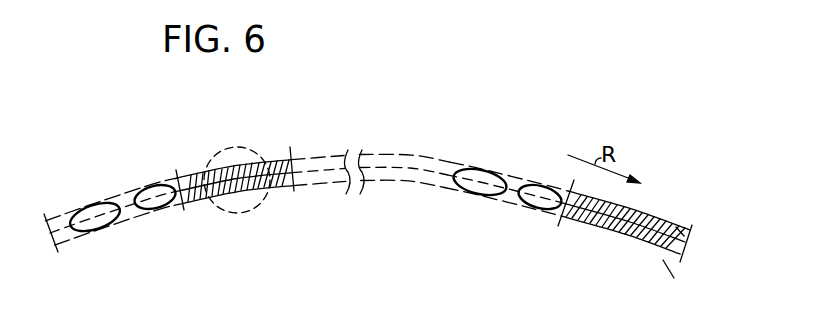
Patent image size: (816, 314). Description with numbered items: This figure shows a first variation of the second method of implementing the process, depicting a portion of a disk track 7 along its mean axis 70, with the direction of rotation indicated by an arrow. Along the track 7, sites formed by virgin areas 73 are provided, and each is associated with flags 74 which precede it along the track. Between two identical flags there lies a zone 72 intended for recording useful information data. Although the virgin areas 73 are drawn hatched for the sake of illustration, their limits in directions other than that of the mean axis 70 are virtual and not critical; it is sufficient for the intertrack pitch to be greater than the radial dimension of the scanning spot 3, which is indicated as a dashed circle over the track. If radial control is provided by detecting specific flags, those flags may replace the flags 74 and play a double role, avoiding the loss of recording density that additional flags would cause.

The mean axis 70 is at (407, 173).
The zone 72 is at (428, 213).
The virgin areas 73 is at (250, 205).
The flags 74 is at (176, 227).
The track 7 is at (135, 190).
The scanning spot 3 is at (214, 152).